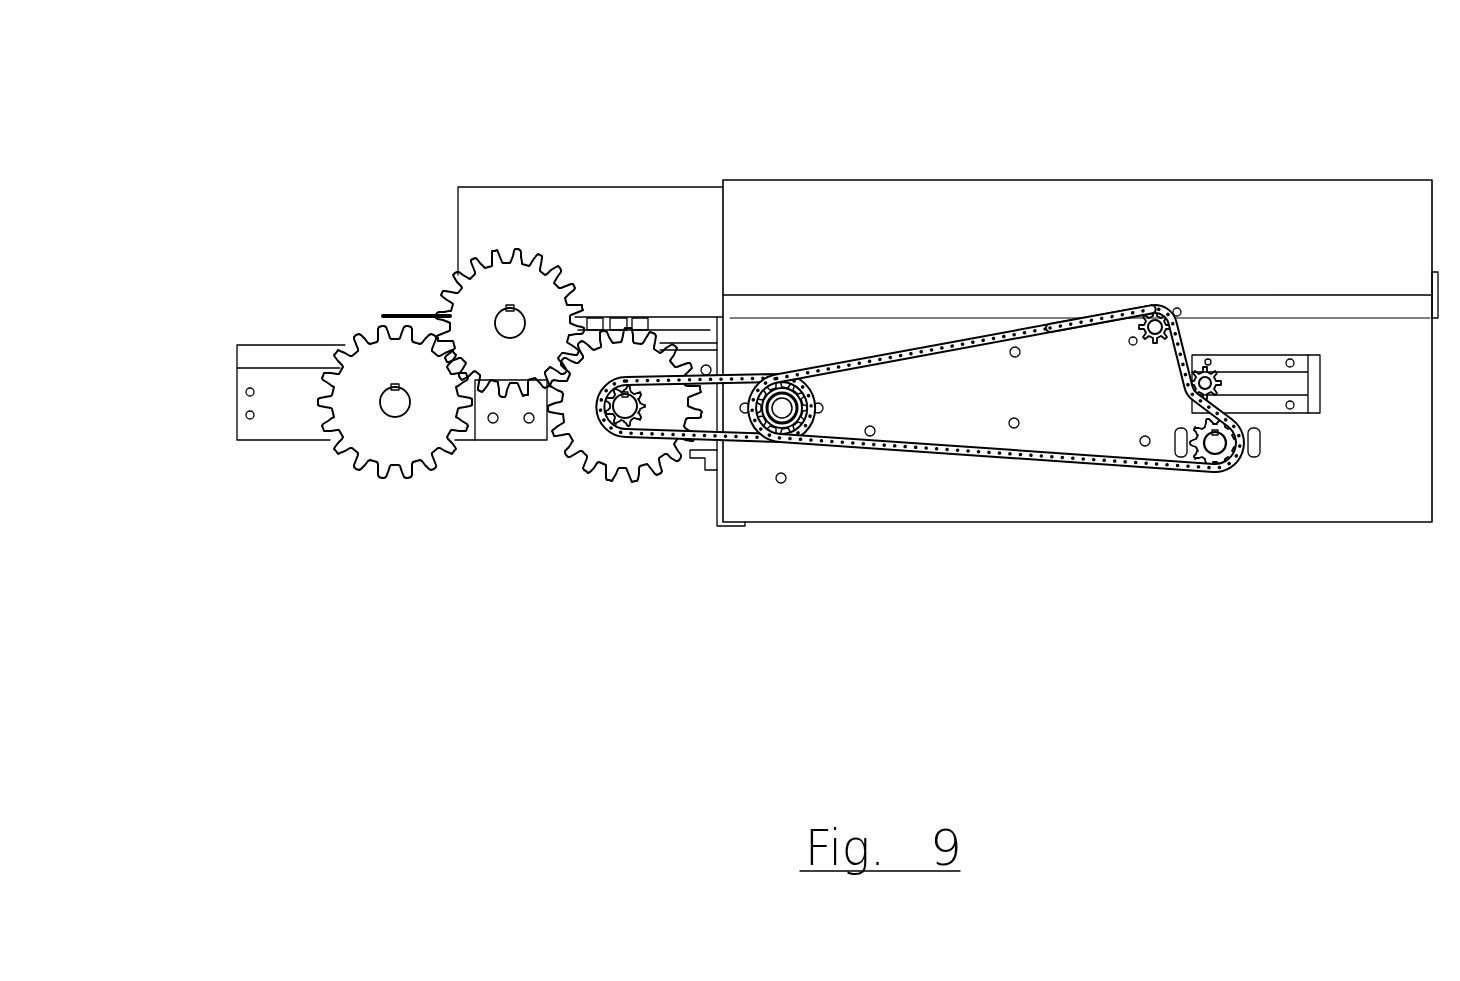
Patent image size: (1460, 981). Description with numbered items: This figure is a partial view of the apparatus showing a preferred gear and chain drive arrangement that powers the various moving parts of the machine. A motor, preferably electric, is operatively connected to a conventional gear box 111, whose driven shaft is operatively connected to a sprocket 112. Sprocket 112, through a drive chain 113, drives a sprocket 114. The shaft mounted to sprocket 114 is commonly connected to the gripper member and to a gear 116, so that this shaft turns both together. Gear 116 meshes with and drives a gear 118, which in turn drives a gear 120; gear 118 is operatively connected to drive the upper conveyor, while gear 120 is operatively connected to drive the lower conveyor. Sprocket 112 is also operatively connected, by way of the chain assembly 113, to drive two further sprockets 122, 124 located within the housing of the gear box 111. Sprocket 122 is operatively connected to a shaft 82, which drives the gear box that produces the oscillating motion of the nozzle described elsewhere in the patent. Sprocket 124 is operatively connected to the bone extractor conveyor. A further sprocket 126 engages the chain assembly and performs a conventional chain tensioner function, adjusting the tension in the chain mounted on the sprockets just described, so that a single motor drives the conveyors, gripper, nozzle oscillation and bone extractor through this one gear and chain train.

The gear box 111 is at (1138, 612).
The sprocket 112 is at (786, 430).
The drive chain 113 is at (742, 380).
The sprocket 114 is at (648, 433).
The gear 116 is at (593, 455).
The gear 118 is at (505, 367).
The gear 120 is at (363, 472).
The sprocket 122 is at (1128, 317).
The sprocket 124 is at (1213, 457).
The sprocket 126 is at (1223, 360).
The shaft 82 is at (1178, 327).